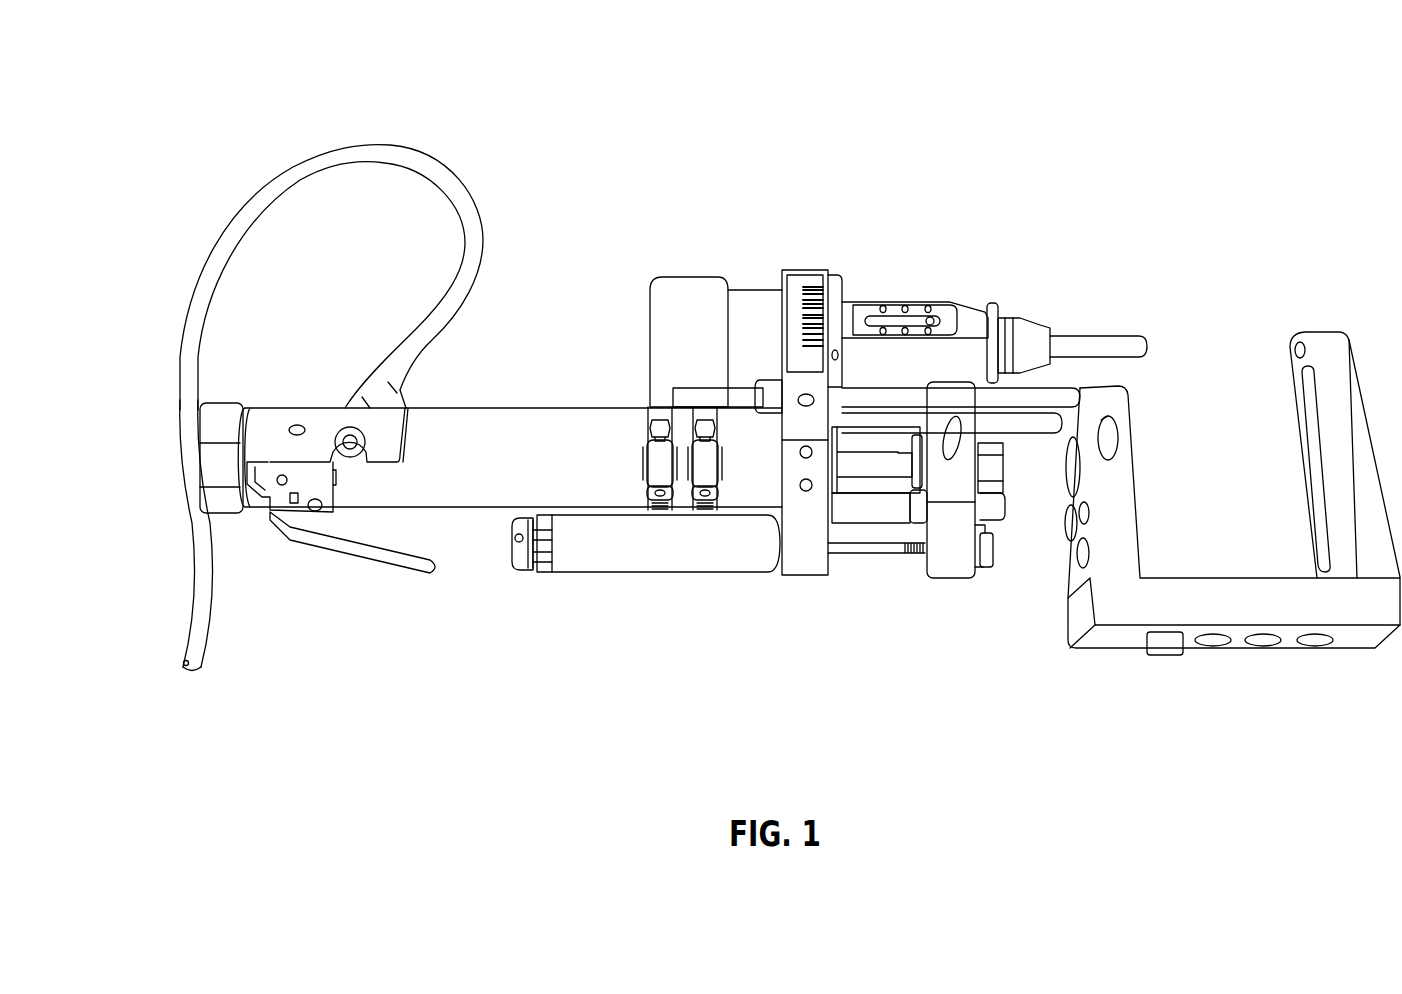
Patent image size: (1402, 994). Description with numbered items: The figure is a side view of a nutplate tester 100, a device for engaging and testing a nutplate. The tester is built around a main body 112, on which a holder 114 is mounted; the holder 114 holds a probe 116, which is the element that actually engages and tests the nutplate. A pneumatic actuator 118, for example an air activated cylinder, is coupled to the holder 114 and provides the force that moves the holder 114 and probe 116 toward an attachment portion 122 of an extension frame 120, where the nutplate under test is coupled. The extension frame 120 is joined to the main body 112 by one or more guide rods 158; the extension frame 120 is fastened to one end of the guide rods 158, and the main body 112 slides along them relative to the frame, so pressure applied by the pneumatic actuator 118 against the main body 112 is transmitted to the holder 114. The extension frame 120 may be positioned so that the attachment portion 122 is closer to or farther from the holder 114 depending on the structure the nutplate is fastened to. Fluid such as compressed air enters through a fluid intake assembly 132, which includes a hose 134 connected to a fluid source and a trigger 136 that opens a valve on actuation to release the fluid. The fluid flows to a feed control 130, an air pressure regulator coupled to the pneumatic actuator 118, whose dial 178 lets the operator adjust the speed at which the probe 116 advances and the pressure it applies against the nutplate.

The nutplate tester 100 is at (327, 84).
The main body 112 is at (797, 288).
The holder 114 is at (750, 300).
The probe 116 is at (1038, 328).
The pneumatic actuator 118 is at (752, 470).
The extension frame 120 is at (1267, 700).
The attachment portion 122 is at (1295, 333).
The feed control 130 is at (610, 543).
The fluid intake assembly 132 is at (138, 334).
The hose 134 is at (199, 600).
The trigger 136 is at (342, 547).
The guide rods 158 is at (883, 397).
The dial 178 is at (517, 562).